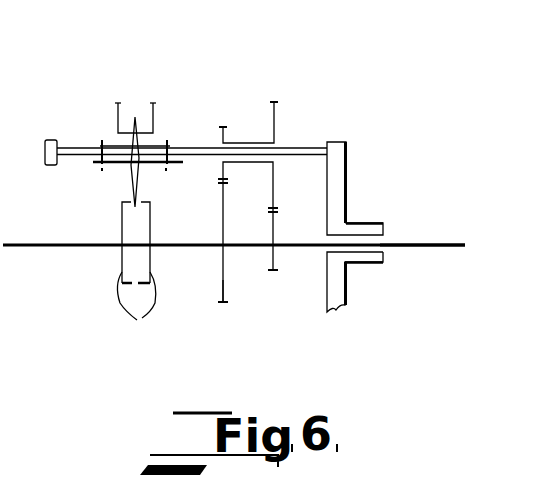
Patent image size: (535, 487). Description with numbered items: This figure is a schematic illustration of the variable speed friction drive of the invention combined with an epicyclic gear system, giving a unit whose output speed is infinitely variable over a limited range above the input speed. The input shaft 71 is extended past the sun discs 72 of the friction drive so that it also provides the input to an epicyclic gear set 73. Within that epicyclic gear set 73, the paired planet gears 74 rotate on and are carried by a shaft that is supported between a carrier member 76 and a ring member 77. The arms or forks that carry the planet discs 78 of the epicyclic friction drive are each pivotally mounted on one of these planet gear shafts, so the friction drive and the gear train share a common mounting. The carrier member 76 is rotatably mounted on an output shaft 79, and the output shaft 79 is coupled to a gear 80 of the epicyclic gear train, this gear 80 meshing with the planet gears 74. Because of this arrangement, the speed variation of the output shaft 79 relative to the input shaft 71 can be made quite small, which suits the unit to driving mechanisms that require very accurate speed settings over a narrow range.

The input shaft 71 is at (32, 247).
The sun discs 72 is at (136, 279).
The epicyclic gear set 73 is at (257, 79).
The paired planet gears 74 is at (245, 141).
The carrier member 76 is at (342, 187).
The ring member 77 is at (52, 140).
The planet discs 78 is at (137, 177).
The output shaft 79 is at (427, 243).
The gear 80 is at (225, 280).